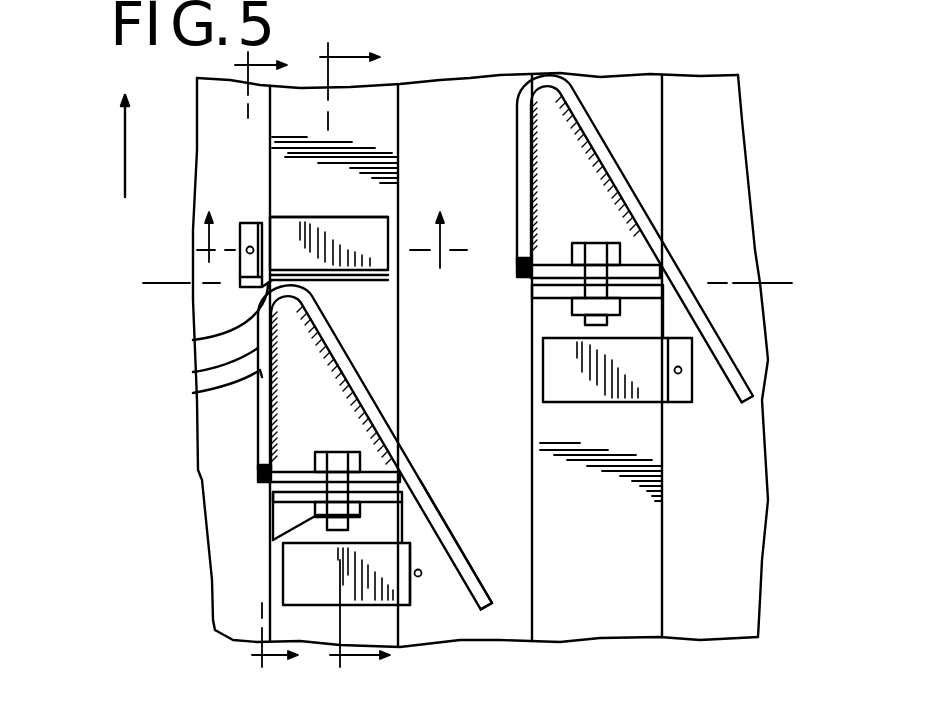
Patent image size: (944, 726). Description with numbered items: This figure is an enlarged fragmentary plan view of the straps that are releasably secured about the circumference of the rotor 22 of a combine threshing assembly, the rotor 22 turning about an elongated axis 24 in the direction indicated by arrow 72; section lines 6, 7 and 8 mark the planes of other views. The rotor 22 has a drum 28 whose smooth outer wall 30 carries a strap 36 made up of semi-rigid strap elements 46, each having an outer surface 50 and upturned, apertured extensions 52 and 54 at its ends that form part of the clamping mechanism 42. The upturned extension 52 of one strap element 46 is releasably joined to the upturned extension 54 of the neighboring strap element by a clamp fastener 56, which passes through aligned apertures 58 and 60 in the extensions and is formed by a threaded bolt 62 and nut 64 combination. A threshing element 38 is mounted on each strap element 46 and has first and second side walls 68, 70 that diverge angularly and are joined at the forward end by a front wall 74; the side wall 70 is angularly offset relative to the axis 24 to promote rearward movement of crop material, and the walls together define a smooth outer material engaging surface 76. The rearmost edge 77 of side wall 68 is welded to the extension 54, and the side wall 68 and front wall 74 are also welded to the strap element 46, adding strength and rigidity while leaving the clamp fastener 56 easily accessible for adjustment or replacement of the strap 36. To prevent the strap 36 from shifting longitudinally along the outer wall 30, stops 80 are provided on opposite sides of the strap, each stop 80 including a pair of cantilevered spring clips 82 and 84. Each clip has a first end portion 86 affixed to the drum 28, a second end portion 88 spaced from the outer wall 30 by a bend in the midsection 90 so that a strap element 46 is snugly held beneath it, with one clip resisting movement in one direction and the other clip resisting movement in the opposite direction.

The rotor 22 is at (180, 299).
The elongated axis 24 is at (158, 283).
The drum 28 is at (482, 409).
The smooth outer wall 30 is at (473, 93).
The strap 36 is at (260, 147).
The threshing element 38 is at (368, 353).
The clamping mechanism 42 is at (266, 495).
The strap element 46 is at (343, 191).
The outer surface 50 is at (380, 131).
The upturned extension 52 is at (280, 503).
The upturned extension 54 is at (282, 470).
The clamp fastener 56 is at (332, 444).
The aperture 58 is at (358, 515).
The aperture 60 is at (343, 508).
The threaded bolt 62 is at (315, 462).
The nut 64 is at (313, 516).
The first side wall 68 is at (193, 393).
The second side wall 70 is at (427, 503).
The arrow 72 is at (125, 162).
The front wall 74 is at (193, 340).
The outer material engaging surface 76 is at (193, 372).
The rearmost edge 77 is at (270, 478).
The stop 80 is at (406, 228).
The spring clip 82 is at (372, 213).
The spring clip 84 is at (387, 605).
The first end portion 86 is at (248, 282).
The second end portion 88 is at (370, 266).
The midsection 90 is at (270, 222).
The section line 6- 6 is at (257, 361).
The section line 7- 7 is at (366, 358).
The section line 8- 8 is at (332, 244).